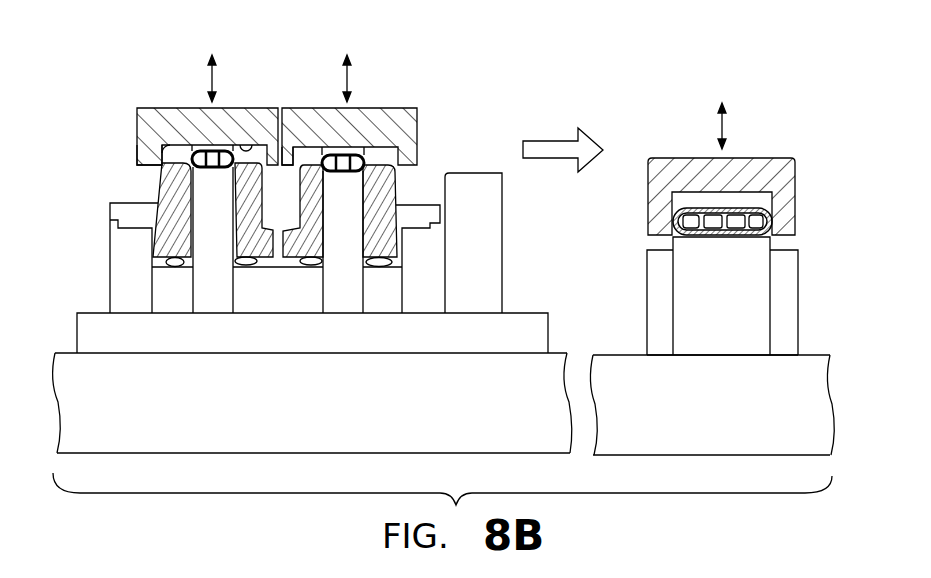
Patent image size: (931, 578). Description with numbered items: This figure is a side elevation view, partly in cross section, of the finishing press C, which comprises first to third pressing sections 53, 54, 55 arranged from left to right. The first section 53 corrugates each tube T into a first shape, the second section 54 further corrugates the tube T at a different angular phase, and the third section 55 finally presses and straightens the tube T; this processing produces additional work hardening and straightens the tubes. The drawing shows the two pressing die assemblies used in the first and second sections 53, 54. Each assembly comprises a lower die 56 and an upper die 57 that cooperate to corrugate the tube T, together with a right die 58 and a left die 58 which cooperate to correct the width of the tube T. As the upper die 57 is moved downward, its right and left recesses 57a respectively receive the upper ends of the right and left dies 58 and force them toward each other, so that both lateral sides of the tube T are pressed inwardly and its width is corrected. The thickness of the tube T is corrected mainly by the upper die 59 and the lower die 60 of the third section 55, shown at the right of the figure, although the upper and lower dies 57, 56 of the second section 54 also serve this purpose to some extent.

The first pressing section 53 is at (174, 306).
The second pressing section 54 is at (304, 307).
The third pressing section 55 is at (694, 344).
The lower die 56 is at (210, 217).
The upper die 57 is at (178, 121).
The recesses 57a is at (248, 150).
The right die and left die 58 is at (245, 205).
The upper die 59 is at (750, 170).
The lower die 60 is at (753, 278).
The tube T is at (210, 152).
The finishing press C is at (813, 312).